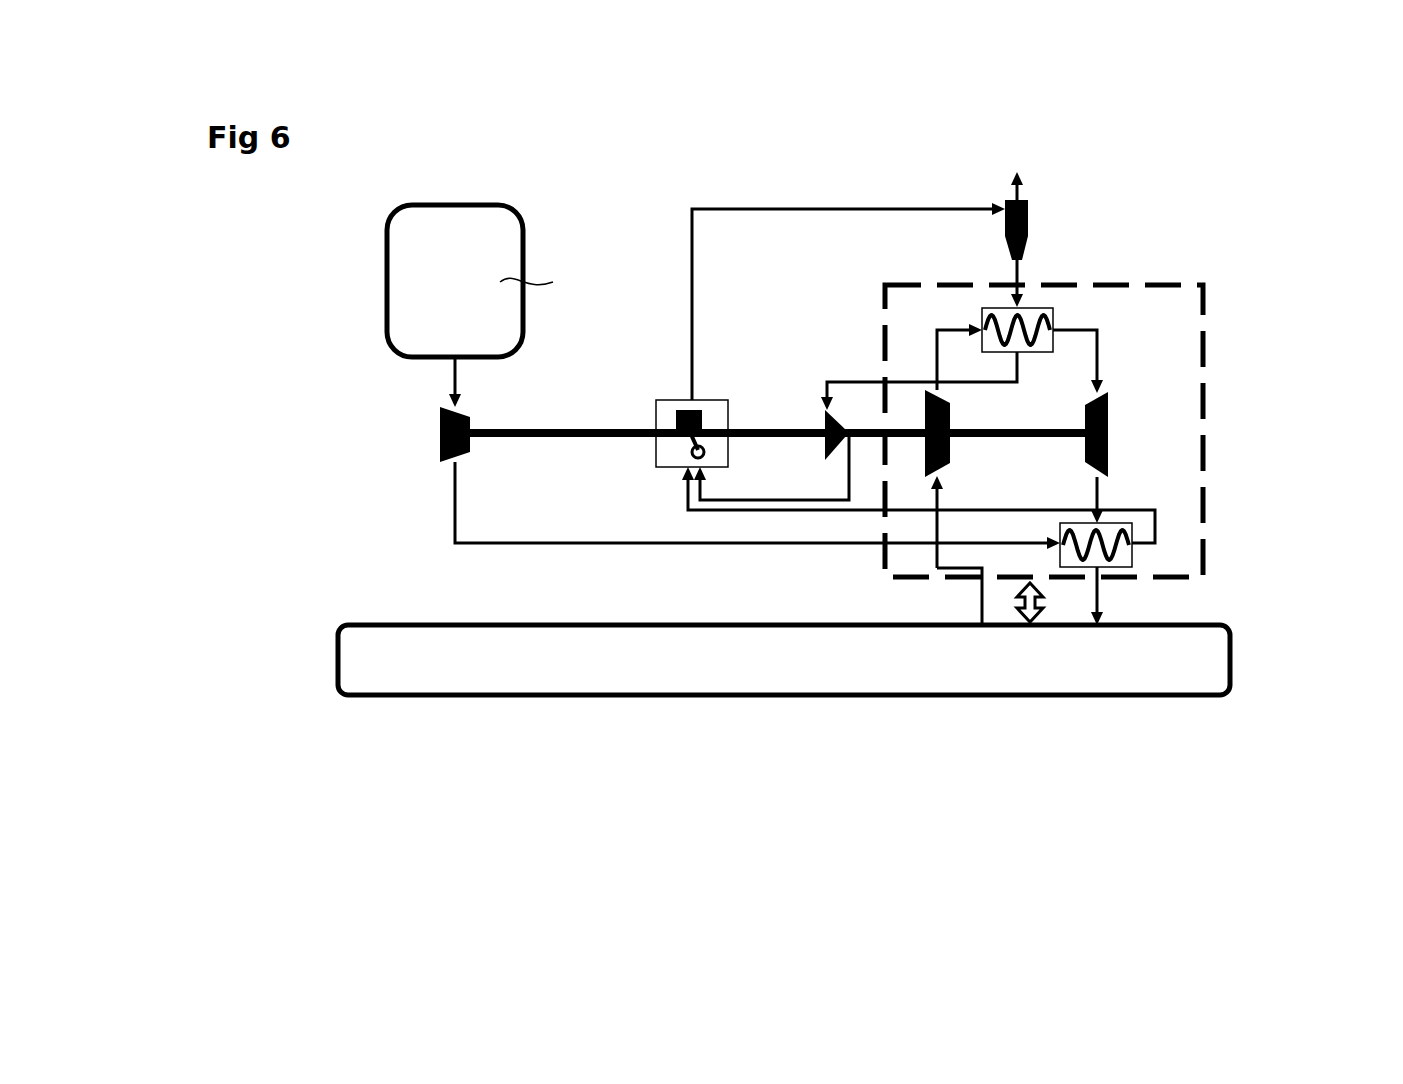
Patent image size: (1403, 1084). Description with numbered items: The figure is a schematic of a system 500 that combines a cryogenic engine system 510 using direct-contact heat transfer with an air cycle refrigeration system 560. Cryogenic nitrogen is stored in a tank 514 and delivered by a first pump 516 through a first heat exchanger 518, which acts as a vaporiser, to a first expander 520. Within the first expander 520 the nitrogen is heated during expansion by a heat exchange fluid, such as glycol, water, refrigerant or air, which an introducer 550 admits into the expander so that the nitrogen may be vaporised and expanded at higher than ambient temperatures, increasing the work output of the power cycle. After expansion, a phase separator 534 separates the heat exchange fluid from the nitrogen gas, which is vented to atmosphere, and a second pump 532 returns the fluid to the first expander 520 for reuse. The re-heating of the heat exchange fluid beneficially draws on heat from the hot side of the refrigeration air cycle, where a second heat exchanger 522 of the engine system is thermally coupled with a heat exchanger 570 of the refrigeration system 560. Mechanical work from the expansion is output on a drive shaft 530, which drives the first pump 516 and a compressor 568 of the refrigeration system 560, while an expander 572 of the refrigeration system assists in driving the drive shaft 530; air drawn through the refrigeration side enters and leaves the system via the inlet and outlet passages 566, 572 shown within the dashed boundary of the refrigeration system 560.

The system 500 is at (658, 582).
The cryogenic engine system 510 is at (412, 586).
The tank 514 is at (503, 237).
The first pump 516 is at (440, 424).
The first heat exchanger 518 is at (1128, 530).
The first expander 520 is at (660, 405).
The second heat exchanger 522 is at (1040, 309).
The drive shaft 530 is at (1020, 427).
The second pump 532 is at (825, 417).
The phase separator 534 is at (1028, 217).
The introducer 550 is at (708, 475).
The refrigeration system 560 is at (1185, 567).
The air inlet 566 is at (1000, 565).
The compressor 568 is at (922, 420).
The heat exchanger 570 is at (1052, 318).
The expander 572 is at (1108, 412).